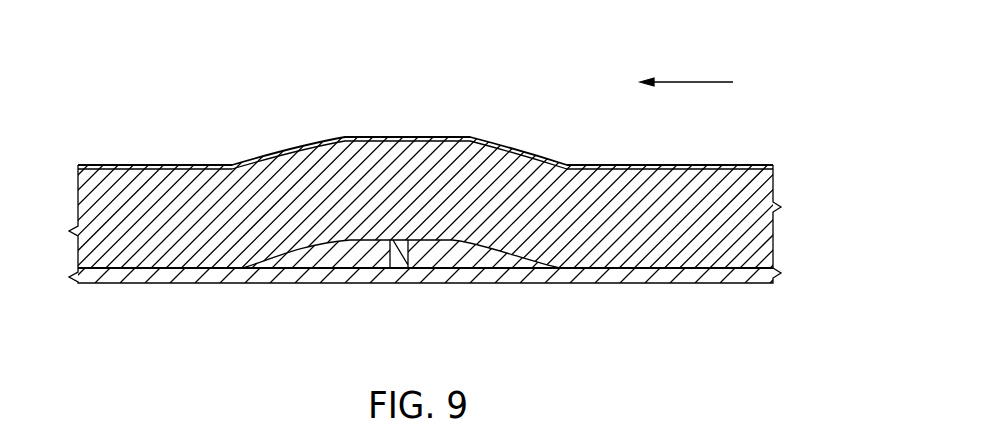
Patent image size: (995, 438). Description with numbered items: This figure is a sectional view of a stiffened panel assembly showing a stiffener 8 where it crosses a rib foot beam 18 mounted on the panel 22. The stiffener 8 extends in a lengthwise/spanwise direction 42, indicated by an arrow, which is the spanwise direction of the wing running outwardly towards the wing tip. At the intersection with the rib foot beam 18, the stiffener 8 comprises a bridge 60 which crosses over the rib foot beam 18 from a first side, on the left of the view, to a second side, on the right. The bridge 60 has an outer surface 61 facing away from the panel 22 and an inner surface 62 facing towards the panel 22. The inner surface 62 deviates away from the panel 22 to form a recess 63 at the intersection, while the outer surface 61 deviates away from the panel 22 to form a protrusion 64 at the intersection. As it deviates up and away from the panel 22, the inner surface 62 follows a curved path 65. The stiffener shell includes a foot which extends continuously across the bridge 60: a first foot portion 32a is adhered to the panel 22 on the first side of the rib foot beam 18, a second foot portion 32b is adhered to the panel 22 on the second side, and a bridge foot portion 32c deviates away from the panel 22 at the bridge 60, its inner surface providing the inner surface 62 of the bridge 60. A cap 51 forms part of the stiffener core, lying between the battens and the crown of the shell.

The stiffener 8 is at (593, 120).
The rib foot beam 18 is at (401, 253).
The panel 22 is at (150, 283).
The first foot portion 32a is at (173, 267).
The second foot portion 32b is at (628, 268).
The bridge foot portion 32c is at (452, 238).
The lengthwise/spanwise direction 42 is at (685, 82).
The cap 51 is at (733, 172).
The bridge 60 is at (412, 168).
The outer surface 61 is at (472, 138).
The inner surface 62 is at (330, 241).
The recess 63 is at (417, 243).
The protrusion 64 is at (352, 118).
The curved path 65 is at (522, 262).